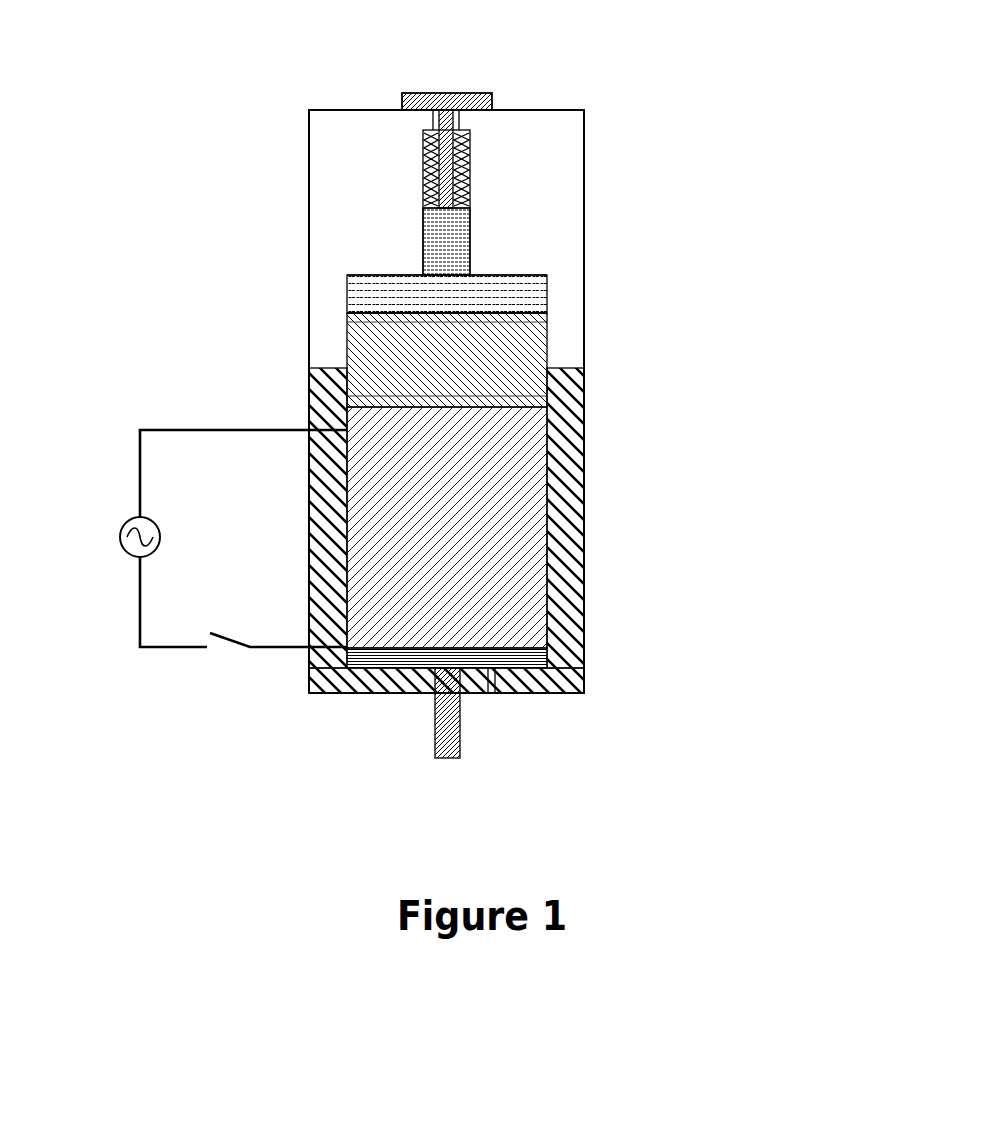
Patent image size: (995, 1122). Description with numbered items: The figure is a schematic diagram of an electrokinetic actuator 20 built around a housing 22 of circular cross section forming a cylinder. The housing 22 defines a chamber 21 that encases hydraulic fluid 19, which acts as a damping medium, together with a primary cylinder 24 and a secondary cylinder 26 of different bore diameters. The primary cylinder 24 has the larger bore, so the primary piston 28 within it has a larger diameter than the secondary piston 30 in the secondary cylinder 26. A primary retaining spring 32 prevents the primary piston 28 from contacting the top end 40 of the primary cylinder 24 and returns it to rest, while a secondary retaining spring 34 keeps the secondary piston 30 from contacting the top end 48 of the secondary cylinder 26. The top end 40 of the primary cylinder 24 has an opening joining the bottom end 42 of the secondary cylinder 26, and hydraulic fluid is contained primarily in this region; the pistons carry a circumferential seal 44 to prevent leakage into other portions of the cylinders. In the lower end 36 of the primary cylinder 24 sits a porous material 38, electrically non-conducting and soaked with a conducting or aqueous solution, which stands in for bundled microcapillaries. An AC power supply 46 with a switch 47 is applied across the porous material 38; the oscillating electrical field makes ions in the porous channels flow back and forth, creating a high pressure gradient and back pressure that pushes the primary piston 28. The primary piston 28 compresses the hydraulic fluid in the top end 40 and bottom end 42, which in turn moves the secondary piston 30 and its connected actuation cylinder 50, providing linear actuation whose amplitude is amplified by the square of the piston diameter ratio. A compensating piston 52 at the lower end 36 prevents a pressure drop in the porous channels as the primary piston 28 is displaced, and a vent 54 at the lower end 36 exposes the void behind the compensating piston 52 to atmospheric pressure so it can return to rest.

The hydraulic fluid 19 is at (478, 497).
The electrokinetic actuator 20 is at (622, 125).
The chamber 21 is at (547, 137).
The housing 22 is at (585, 262).
The primary cylinder 24 is at (548, 343).
The secondary cylinder 26 is at (423, 235).
The primary piston 28 is at (347, 342).
The secondary piston 30 is at (470, 220).
The primary retaining spring 32 is at (347, 295).
The secondary retaining spring 34 is at (422, 157).
The lower end of the primary cylinder 36 is at (540, 630).
The porous material 38 is at (540, 528).
The top end of the primary cylinder 40 is at (480, 277).
The bottom end of the secondary cylinder 42 is at (440, 272).
The circumferential seal 44 is at (423, 210).
The AC power supply 46 is at (118, 528).
The switch 47 is at (230, 655).
The top end of the secondary cylinder 48 is at (433, 128).
The actuation cylinder 50 is at (457, 92).
The compensating piston 52 is at (470, 657).
The vent 54 is at (490, 695).